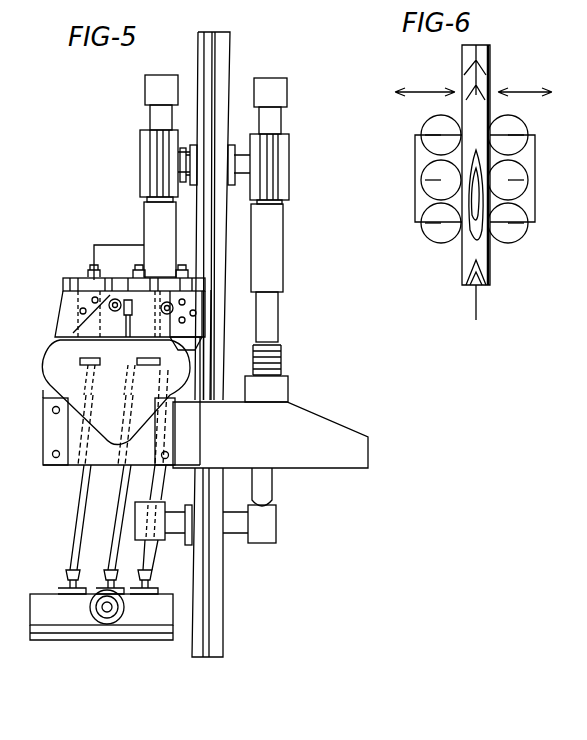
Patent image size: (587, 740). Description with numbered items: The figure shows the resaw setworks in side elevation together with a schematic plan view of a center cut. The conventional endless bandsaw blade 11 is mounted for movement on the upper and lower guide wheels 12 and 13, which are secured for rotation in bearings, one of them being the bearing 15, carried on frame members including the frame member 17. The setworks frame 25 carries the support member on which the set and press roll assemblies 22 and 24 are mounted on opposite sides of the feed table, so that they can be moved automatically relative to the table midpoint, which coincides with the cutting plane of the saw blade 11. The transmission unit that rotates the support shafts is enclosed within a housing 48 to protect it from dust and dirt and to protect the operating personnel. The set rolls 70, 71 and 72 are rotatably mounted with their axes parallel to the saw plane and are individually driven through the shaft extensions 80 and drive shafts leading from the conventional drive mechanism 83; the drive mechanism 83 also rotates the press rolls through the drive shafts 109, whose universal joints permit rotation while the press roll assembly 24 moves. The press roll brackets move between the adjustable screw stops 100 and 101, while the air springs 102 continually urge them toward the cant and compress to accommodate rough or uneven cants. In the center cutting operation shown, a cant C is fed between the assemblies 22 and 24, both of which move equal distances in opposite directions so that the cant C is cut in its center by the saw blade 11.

In FIG. 5, the bandsaw blade 11 is at (211, 322).
In FIG. 5, the upper guide wheel 12 is at (228, 46).
In FIG. 5, the lower guide wheel 13 is at (216, 597).
In FIG. 5, the bearing 15 is at (273, 523).
In FIG. 5, the frame member 17 is at (147, 226).
In FIG. 6, the set roll assembly 22 is at (406, 168).
In FIG. 6, the press roll assembly 24 is at (546, 170).
In FIG. 5, the setworks frame 25 is at (315, 422).
In FIG. 5, the housing 48 is at (50, 356).
In FIG. 6, the set roll 70 is at (430, 120).
In FIG. 6, the set roll 71 is at (424, 188).
In FIG. 6, the set roll 72 is at (432, 236).
In FIG. 5, the shaft extension 80 is at (216, 368).
In FIG. 5, the drive mechanism 83 is at (62, 623).
In FIG. 6, the adjustable screw stop 100 is at (516, 122).
In FIG. 6, the adjustable screw stop 101 is at (518, 190).
In FIG. 6, the air spring 102 is at (510, 236).
In FIG. 5, the drive shaft 109 is at (147, 558).
In FIG. 6, the cant C is at (490, 68).